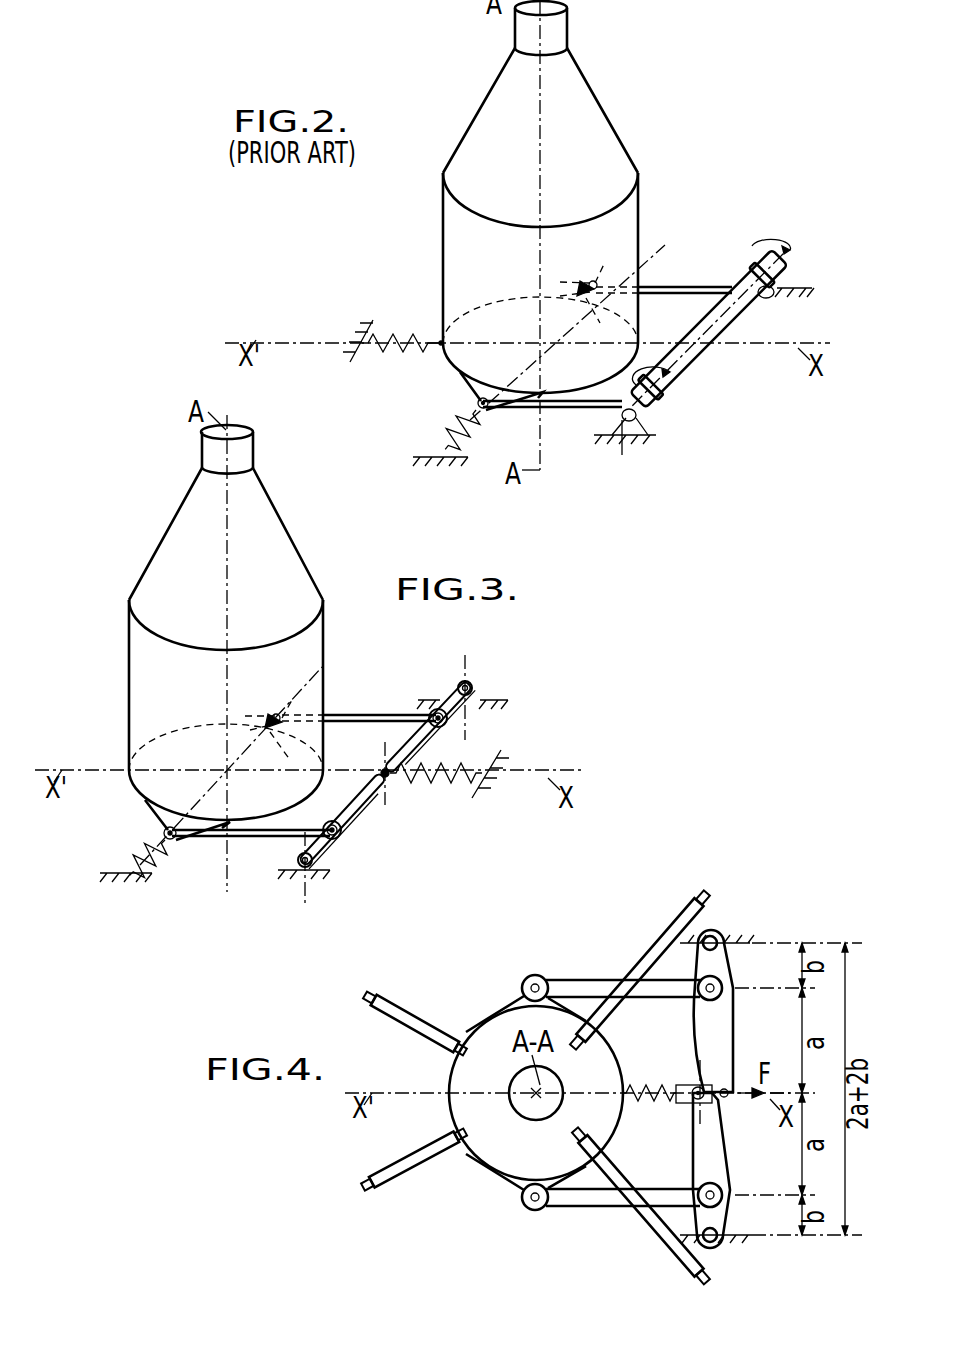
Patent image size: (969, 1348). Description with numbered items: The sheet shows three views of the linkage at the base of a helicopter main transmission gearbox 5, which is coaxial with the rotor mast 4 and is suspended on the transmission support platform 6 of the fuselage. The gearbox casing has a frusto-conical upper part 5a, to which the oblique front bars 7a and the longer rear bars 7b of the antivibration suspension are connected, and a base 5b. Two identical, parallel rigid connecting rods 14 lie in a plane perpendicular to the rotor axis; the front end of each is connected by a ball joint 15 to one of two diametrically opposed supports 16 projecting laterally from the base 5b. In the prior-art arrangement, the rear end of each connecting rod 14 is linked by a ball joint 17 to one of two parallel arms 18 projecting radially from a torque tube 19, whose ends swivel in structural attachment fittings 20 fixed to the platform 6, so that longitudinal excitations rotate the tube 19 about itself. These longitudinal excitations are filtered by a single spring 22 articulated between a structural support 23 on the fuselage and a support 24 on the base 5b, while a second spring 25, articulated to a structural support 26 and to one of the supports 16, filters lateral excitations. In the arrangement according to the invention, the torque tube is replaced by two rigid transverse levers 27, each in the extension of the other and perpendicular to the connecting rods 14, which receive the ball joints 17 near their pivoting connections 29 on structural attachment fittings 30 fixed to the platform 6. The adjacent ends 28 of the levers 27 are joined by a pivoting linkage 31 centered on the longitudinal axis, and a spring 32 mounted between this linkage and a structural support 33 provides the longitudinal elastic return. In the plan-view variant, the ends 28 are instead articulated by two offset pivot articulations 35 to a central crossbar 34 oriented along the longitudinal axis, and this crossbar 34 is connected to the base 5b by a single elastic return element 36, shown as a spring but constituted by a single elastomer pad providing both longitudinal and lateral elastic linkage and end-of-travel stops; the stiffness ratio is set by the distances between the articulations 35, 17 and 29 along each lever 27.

In FIG. 2, the rotor mast 4 is at (560, 28).
In FIG. 2, the main transmission gearbox 5 is at (526, 197).
In FIG. 3, the main transmission gearbox 5 is at (213, 622).
In FIG. 4, the main transmission gearbox 5 is at (478, 1143).
In FIG. 2, the frusto-conical upper part 5a is at (592, 115).
In FIG. 3, the frusto-conical upper part 5a is at (276, 548).
In FIG. 2, the base 5b is at (455, 222).
In FIG. 3, the base 5b is at (142, 678).
In FIG. 2, the transmission support platform 6 is at (803, 287).
In FIG. 4, the front bars 7a is at (427, 1033).
In FIG. 4, the rear bars 7b is at (652, 950).
In FIG. 2, the connecting rods 14 is at (678, 292).
In FIG. 3, the connecting rods 14 is at (378, 715).
In FIG. 4, the connecting rods 14 is at (660, 997).
In FIG. 2, the ball joint 15 is at (600, 282).
In FIG. 3, the ball joint 15 is at (292, 710).
In FIG. 4, the ball joint 15 is at (537, 984).
In FIG. 2, the supports 16 is at (586, 279).
In FIG. 3, the supports 16 is at (258, 712).
In FIG. 4, the supports 16 is at (516, 997).
In FIG. 2, the ball joint 17 is at (768, 298).
In FIG. 3, the ball joint 17 is at (436, 710).
In FIG. 4, the ball joint 17 is at (722, 988).
In FIG. 2, the arms 18 is at (790, 282).
In FIG. 2, the torque tube 19 is at (700, 351).
In FIG. 2, the structural attachment fittings 20 is at (782, 250).
In FIG. 2, the spring 22 is at (390, 335).
In FIG. 2, the structural support 23 is at (355, 345).
In FIG. 2, the support 24 is at (440, 340).
In FIG. 2, the second spring 25 is at (456, 424).
In FIG. 3, the second spring 25 is at (148, 848).
In FIG. 2, the structural support 26 is at (440, 462).
In FIG. 3, the structural support 26 is at (120, 880).
In FIG. 3, the transverse levers 27 is at (447, 738).
In FIG. 4, the transverse levers 27 is at (720, 1024).
In FIG. 3, the ends 28 is at (382, 770).
In FIG. 4, the ends 28 is at (727, 1072).
In FIG. 3, the pivoting connection 29 is at (468, 684).
In FIG. 4, the pivoting connection 29 is at (714, 938).
In FIG. 3, the structural attachment fitting 30 is at (500, 700).
In FIG. 4, the structural attachment fitting 30 is at (735, 940).
In FIG. 3, the pivoting linkage 31 is at (392, 778).
In FIG. 3, the spring 32 is at (470, 770).
In FIG. 3, the structural support 33 is at (485, 797).
In FIG. 4, the central crossbar 34 is at (678, 1084).
In FIG. 4, the pivot articulations 35 is at (724, 1098).
In FIG. 4, the elastic return element 36 is at (640, 1084).